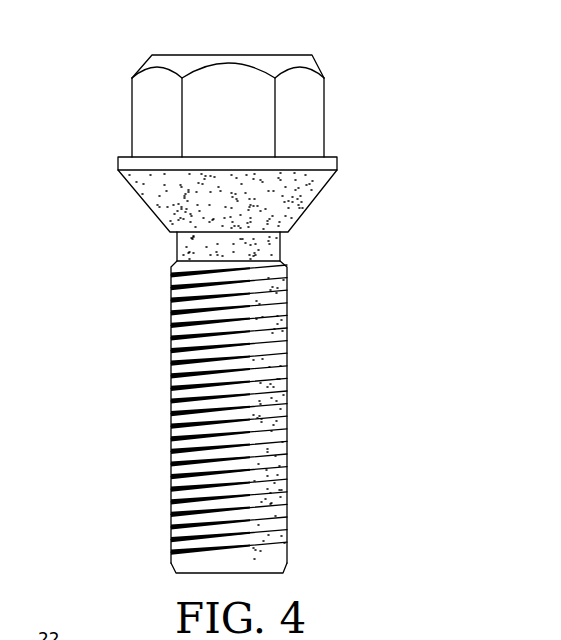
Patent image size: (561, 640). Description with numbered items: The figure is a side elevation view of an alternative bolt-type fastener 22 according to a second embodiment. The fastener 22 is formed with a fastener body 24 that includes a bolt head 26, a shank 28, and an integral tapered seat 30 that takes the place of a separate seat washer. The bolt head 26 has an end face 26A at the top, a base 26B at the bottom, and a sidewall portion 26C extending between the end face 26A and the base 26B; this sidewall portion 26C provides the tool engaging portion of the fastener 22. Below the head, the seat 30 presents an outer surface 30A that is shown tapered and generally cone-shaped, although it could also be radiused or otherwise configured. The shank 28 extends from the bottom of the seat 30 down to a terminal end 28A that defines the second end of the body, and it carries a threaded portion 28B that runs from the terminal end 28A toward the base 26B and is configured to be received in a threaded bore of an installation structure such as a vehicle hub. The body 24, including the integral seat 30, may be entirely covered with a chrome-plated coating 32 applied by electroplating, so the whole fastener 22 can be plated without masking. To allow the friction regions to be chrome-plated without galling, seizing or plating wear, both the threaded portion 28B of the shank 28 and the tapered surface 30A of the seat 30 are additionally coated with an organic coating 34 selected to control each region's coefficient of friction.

The bolt-type fastener 22 is at (113, 62).
The fastener body 24 is at (440, 55).
The bolt head 26 is at (87, 65).
The end face 26A is at (300, 56).
The base 26B is at (328, 150).
The sidewall portion 26C is at (325, 107).
The shank 28 is at (85, 232).
The terminal end 28A is at (258, 573).
The threaded portion 28B is at (325, 260).
The tapered seat 30 is at (403, 157).
The outer surface 30A is at (347, 168).
The chrome-plated coating 32 is at (132, 114).
The organic coating 34 is at (153, 212).